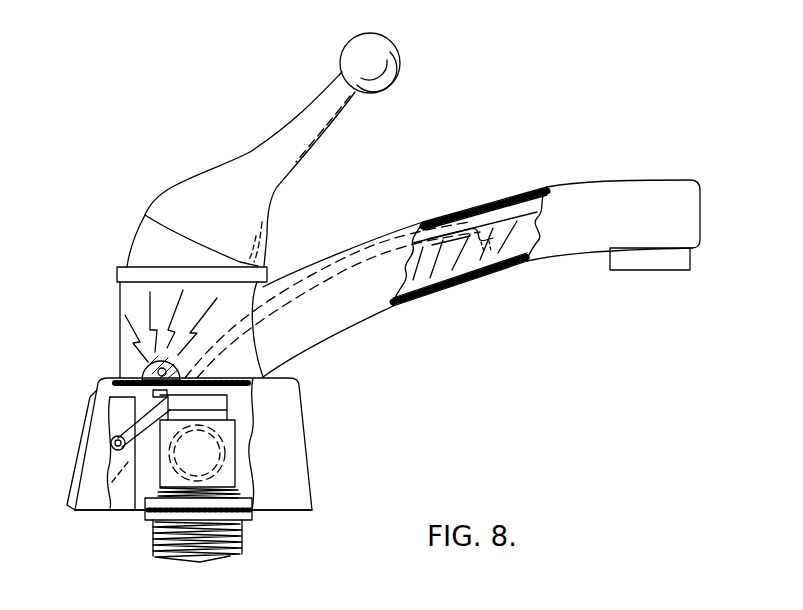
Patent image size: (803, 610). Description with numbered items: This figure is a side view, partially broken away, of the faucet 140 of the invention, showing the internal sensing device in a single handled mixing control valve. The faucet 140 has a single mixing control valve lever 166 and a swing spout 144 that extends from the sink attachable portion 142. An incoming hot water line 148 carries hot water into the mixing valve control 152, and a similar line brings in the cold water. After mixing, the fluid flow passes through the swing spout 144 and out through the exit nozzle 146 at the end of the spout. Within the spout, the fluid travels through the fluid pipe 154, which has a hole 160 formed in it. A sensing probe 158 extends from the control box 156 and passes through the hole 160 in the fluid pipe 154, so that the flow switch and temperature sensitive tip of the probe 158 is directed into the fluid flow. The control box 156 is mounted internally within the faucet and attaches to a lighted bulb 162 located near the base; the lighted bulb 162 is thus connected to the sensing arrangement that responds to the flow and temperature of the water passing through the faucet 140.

The faucet 140 is at (93, 520).
The sink attachable portion 142 is at (287, 505).
The swing spout 144 is at (645, 185).
The exit nozzle 146 is at (645, 265).
The incoming hot water line 148 is at (210, 553).
The mixing valve control 152 is at (218, 405).
The fluid pipe 154 is at (508, 227).
The control box 156 is at (88, 403).
The sensing probe 158 is at (488, 257).
The hole 160 is at (488, 227).
The lighted bulb 162 is at (143, 357).
The single mixing control valve lever 166 is at (250, 157).